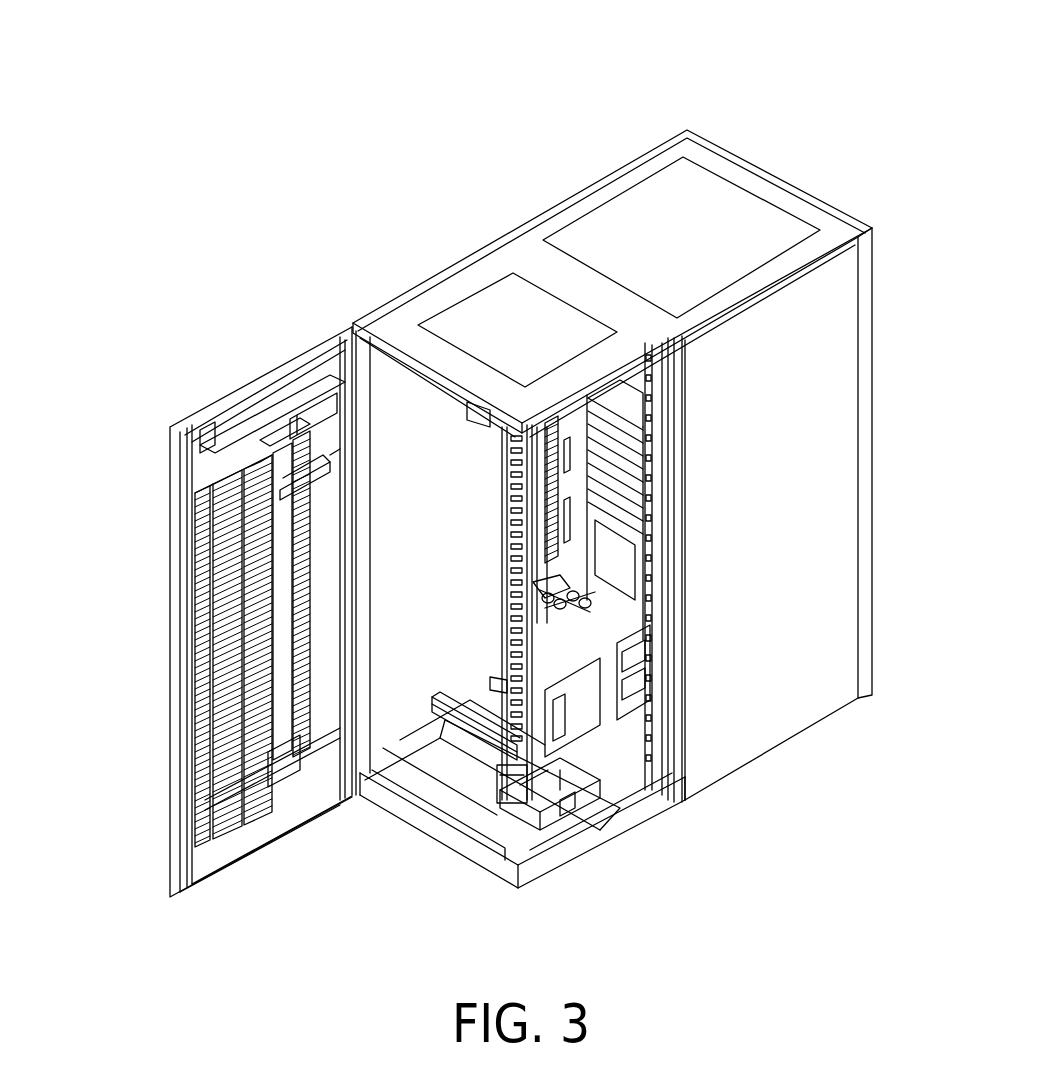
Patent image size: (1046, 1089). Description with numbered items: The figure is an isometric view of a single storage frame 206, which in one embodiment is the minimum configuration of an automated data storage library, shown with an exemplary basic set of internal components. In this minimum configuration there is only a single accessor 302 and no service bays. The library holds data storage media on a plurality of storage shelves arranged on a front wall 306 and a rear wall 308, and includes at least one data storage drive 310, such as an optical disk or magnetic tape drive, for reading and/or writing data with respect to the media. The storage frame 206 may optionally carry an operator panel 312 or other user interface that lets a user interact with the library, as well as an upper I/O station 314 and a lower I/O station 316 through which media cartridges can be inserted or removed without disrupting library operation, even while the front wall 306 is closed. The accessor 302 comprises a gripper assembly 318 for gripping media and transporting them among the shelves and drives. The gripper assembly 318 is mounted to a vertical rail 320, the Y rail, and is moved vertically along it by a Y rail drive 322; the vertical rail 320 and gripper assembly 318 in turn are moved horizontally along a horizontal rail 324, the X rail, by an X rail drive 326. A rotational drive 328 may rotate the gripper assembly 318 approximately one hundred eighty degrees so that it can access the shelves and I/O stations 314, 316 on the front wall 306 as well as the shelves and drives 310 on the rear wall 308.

The storage frame 206 is at (855, 100).
The accessor 302 is at (558, 792).
The front wall 306 is at (187, 562).
The rear wall 308 is at (658, 512).
The data storage drive 310 is at (612, 438).
The operator panel 312 is at (330, 457).
The upper I/O station 314 is at (293, 487).
The lower I/O station 316 is at (300, 637).
The gripper assembly 318 is at (607, 633).
The vertical rail 320 is at (542, 670).
The Y rail drive 322 is at (530, 587).
The horizontal rail 324 is at (457, 710).
The X rail drive 326 is at (517, 787).
The rotational drive 328 is at (573, 602).